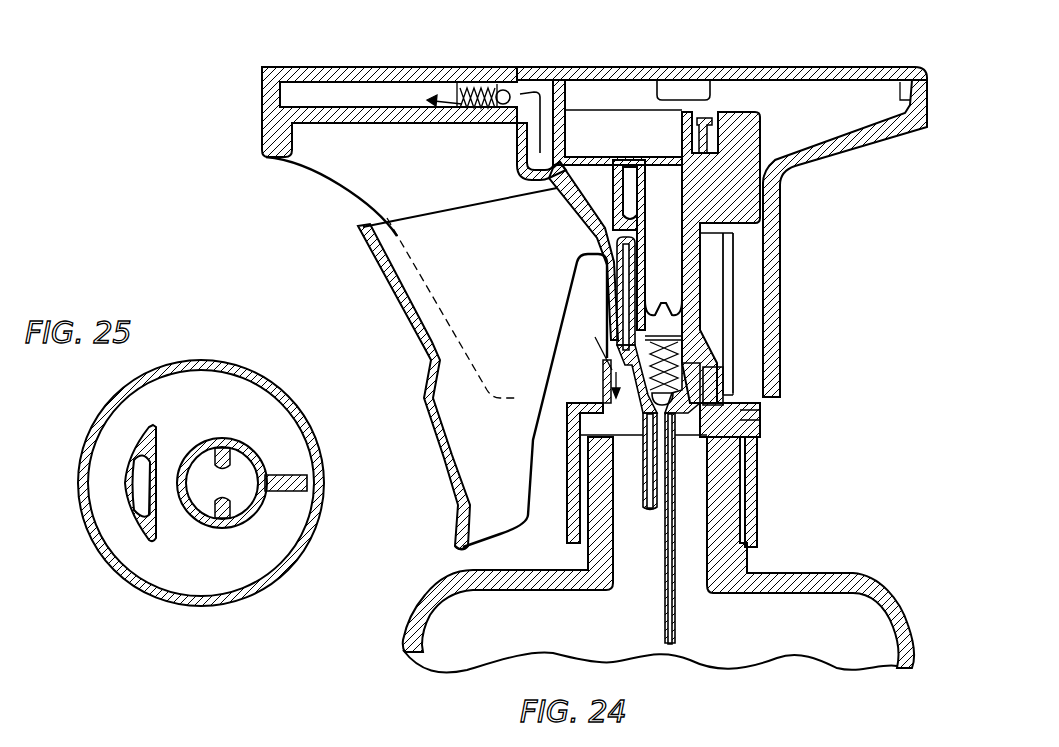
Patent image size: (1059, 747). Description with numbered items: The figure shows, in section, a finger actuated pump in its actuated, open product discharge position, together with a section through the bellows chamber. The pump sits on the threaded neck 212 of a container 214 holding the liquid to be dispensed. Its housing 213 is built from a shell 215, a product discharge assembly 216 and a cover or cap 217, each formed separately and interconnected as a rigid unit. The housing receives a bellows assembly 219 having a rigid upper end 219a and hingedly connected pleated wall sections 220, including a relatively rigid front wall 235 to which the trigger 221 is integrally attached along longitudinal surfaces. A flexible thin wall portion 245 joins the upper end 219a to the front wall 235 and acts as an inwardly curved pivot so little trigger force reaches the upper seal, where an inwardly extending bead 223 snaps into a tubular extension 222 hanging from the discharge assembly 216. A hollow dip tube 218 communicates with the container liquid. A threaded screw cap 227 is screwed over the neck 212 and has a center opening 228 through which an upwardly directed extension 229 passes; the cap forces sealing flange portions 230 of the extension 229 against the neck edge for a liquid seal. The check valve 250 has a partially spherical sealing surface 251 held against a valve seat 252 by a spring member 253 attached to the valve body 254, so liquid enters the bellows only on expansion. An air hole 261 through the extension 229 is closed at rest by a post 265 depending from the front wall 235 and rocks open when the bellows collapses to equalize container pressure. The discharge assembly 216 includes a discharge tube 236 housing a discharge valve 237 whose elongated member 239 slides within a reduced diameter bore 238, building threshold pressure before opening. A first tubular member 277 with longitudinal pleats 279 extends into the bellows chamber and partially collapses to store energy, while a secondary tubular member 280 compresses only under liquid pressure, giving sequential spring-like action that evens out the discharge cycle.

In FIG. 24, the neck 212 is at (790, 580).
In FIG. 24, the housing 213 is at (725, 199).
In FIG. 24, the container 214 is at (900, 620).
In FIG. 24, the shell 215 is at (870, 150).
In FIG. 24, the product discharge assembly 216 is at (371, 58).
In FIG. 24, the cover or cap 217 is at (810, 66).
In FIG. 24, the dip tube 218 is at (678, 626).
In FIG. 24, the bellows assembly 219 is at (575, 233).
In FIG. 24, the upper end of bellows 219a is at (706, 130).
In FIG. 24, the hingedly connected wall sections 220 is at (620, 288).
In FIG. 24, the trigger 221 is at (457, 508).
In FIG. 24, the tubular extension 222 is at (683, 115).
In FIG. 25, the tubular extension 222 is at (307, 407).
In FIG. 24, the inwardly extending bead 223 is at (682, 140).
In FIG. 24, the threaded screw cap 227 is at (757, 505).
In FIG. 24, the center opening 228 is at (574, 440).
In FIG. 24, the extension 229 is at (720, 390).
In FIG. 24, the sealing flange portions 230 is at (748, 427).
In FIG. 24, the front wall 235 is at (572, 203).
In FIG. 25, the front wall 235 is at (100, 520).
In FIG. 24, the discharge tube 236 is at (316, 128).
In FIG. 24, the discharge valve 237 is at (466, 84).
In FIG. 24, the reduced diameter bore 238 is at (537, 88).
In FIG. 24, the elongated member 239 is at (510, 88).
In FIG. 24, the flexible thin wall portion 245 is at (535, 174).
In FIG. 24, the check valve 250 is at (728, 382).
In FIG. 24, the sealing surface 251 is at (759, 414).
In FIG. 24, the valve seat 252 is at (663, 437).
In FIG. 24, the spring member 253 is at (662, 337).
In FIG. 24, the body of the valve 254 is at (682, 350).
In FIG. 24, the air hole 261 is at (604, 380).
In FIG. 24, the post 265 is at (606, 352).
In FIG. 24, the first tubular member 277 is at (700, 213).
In FIG. 25, the first tubular member 277 is at (262, 507).
In FIG. 25, the pleats 279 is at (221, 450).
In FIG. 25, the secondary tubular member 280 is at (152, 540).